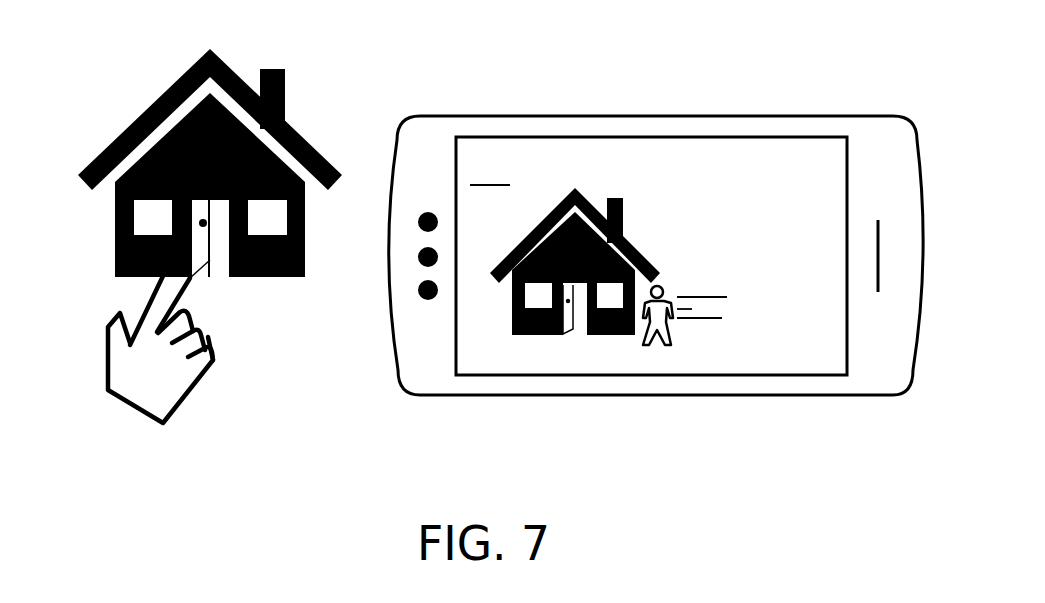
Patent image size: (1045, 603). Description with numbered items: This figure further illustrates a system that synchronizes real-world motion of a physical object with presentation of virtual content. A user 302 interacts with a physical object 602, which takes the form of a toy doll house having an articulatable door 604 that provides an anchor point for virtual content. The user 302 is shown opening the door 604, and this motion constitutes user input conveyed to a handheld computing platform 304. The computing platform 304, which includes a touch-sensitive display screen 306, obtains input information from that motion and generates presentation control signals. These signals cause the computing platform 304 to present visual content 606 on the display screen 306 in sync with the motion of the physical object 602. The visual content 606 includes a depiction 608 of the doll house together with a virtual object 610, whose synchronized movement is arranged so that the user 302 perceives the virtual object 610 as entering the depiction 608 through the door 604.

The user 302 is at (198, 392).
The computing platform 304 is at (733, 120).
The display screen 306 is at (490, 140).
The physical object 602 is at (213, 52).
The door 604 is at (198, 252).
The visual content 606 is at (490, 172).
The depiction 608 is at (577, 197).
The virtual object 610 is at (668, 295).